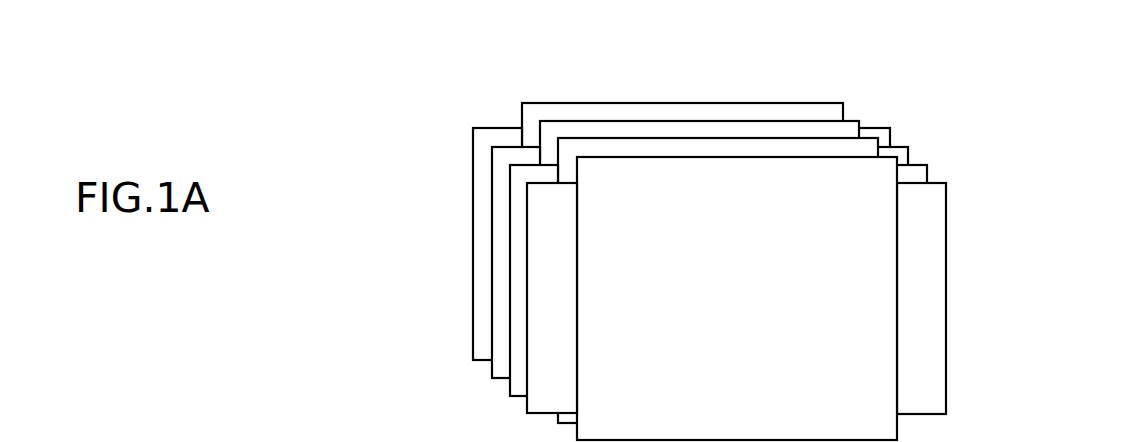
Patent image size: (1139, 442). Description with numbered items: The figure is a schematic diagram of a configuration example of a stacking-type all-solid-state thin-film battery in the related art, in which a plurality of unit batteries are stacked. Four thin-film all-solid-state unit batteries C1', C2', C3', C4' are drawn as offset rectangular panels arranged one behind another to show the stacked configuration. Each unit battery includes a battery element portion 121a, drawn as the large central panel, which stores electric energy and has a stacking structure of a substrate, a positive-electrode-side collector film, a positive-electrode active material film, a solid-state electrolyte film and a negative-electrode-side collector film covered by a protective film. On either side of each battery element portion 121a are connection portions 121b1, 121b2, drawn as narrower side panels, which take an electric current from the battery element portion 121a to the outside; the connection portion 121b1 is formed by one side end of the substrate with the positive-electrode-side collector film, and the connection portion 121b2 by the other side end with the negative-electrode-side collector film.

The battery element portion 121a is at (702, 110).
The connection portion 121b1 is at (529, 402).
The connection portion 121b2 is at (896, 129).
The unit battery C1' is at (552, 80).
The unit battery C2' is at (592, 90).
The unit battery C3' is at (632, 98).
The unit battery C4' is at (670, 109).